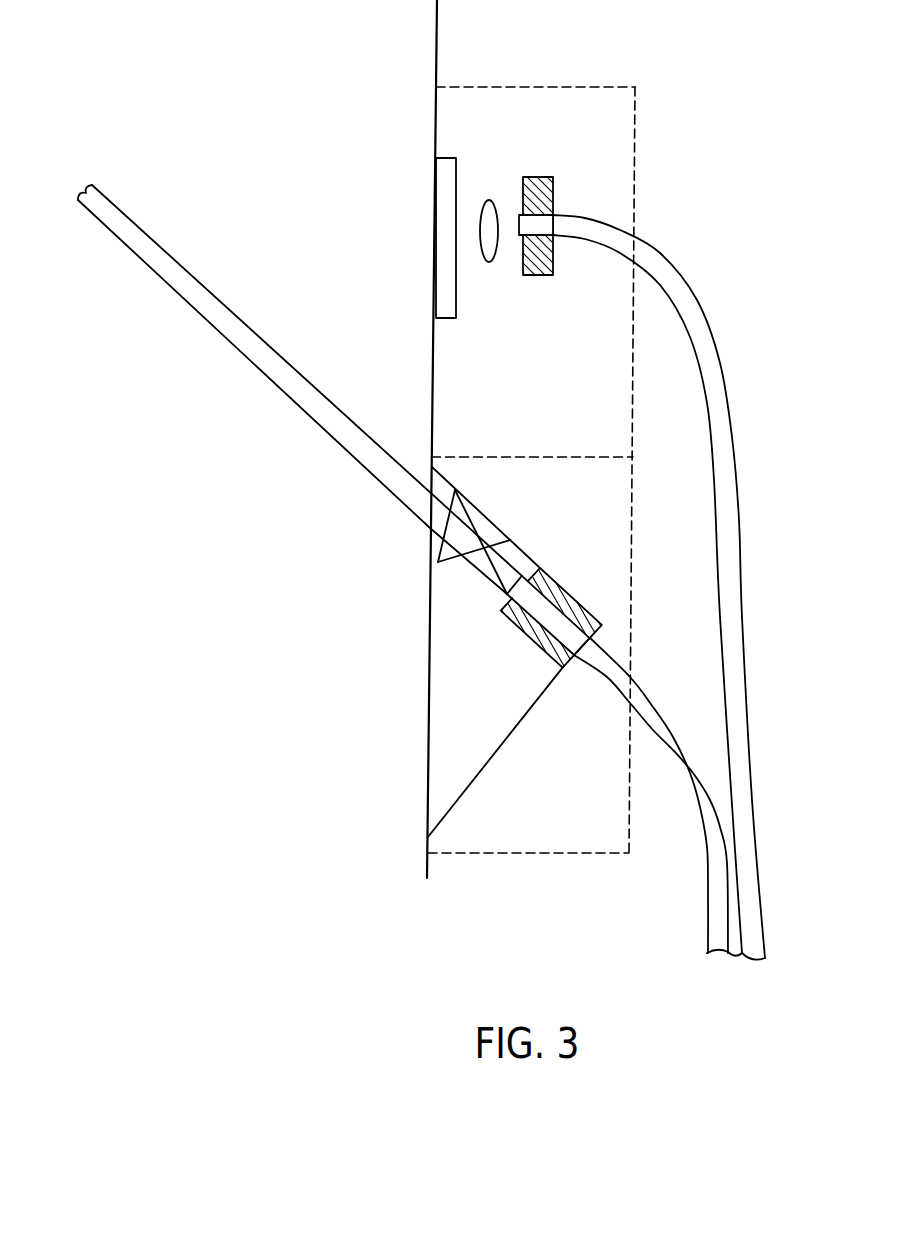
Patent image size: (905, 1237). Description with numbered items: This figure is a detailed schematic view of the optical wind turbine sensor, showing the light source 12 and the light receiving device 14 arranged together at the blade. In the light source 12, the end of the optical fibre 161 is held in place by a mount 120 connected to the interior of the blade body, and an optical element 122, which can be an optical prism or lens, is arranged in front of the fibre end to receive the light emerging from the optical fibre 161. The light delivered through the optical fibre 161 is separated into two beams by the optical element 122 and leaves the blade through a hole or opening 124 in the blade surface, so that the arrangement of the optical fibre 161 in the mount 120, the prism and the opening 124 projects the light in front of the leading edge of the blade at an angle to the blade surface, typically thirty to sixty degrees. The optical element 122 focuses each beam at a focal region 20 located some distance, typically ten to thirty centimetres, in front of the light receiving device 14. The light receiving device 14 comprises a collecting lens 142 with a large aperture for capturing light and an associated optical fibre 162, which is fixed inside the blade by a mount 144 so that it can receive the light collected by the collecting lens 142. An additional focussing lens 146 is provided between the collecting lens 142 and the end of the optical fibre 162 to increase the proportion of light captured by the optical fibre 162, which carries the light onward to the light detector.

The light source 12 is at (402, 777).
The light receiving device 14 is at (341, 151).
The focal region 20 is at (160, 196).
The mount 120 is at (509, 621).
The optical element 122 is at (453, 541).
The opening 124 is at (421, 466).
The collecting lens 142 is at (443, 278).
The mount 144 is at (545, 177).
The focussing lens 146 is at (482, 227).
The optical fibre 161 is at (708, 916).
The optical fibre 162 is at (662, 277).